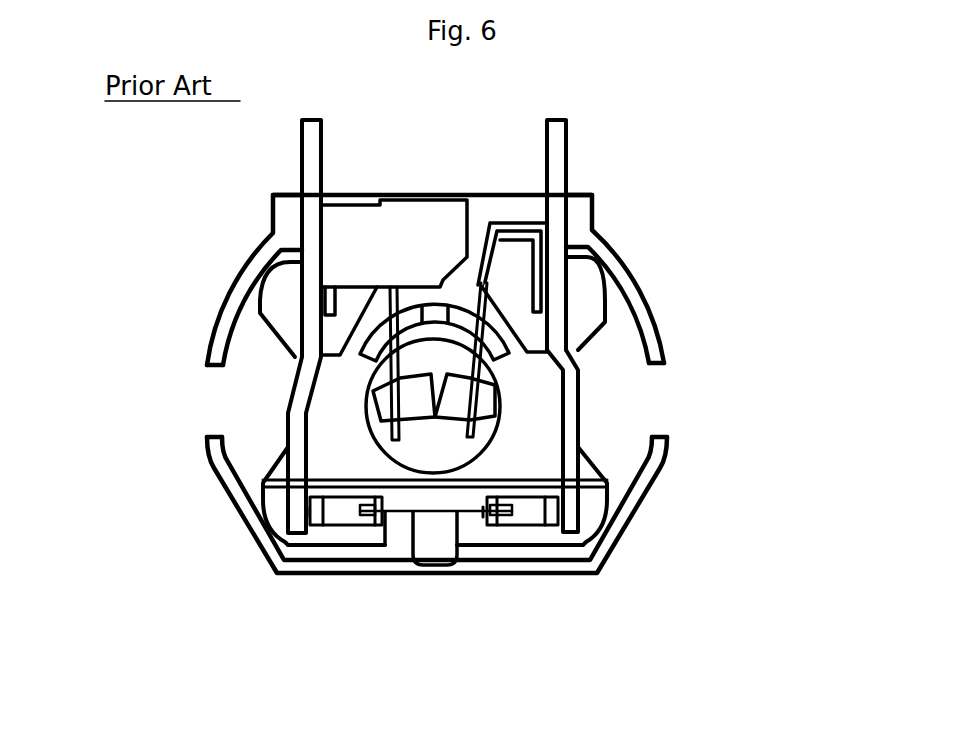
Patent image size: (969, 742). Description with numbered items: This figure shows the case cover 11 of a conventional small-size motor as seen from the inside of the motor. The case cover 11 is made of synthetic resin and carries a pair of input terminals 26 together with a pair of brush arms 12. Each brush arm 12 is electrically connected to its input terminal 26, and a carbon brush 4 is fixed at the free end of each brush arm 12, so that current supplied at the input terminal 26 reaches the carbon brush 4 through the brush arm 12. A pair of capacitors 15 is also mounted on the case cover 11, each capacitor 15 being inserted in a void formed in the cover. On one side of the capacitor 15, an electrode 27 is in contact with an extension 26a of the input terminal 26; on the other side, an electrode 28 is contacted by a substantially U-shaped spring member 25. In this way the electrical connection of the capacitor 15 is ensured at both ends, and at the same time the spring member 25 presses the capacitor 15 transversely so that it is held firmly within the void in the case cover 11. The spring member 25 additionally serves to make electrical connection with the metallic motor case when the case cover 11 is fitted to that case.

The case cover 11 is at (233, 293).
The input terminal 26 is at (567, 160).
The extension of the input terminal 26a is at (572, 497).
The brush arm 12 is at (488, 343).
The carbon brush 4 is at (487, 398).
The electrode 27 is at (600, 547).
The spring member 25 is at (425, 528).
The capacitor 15 is at (522, 527).
The electrode 28 is at (490, 527).